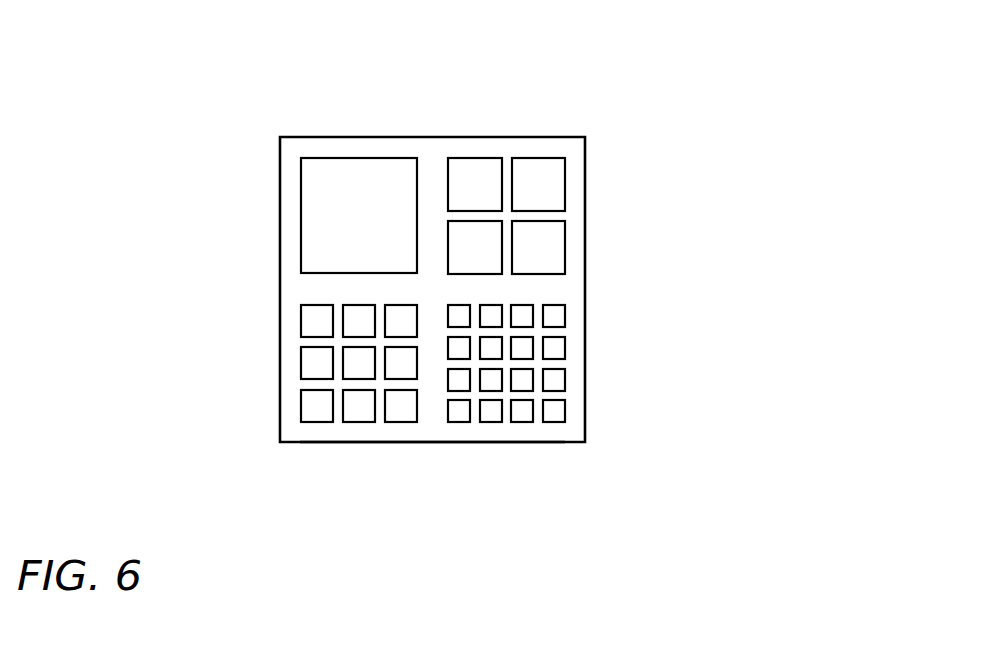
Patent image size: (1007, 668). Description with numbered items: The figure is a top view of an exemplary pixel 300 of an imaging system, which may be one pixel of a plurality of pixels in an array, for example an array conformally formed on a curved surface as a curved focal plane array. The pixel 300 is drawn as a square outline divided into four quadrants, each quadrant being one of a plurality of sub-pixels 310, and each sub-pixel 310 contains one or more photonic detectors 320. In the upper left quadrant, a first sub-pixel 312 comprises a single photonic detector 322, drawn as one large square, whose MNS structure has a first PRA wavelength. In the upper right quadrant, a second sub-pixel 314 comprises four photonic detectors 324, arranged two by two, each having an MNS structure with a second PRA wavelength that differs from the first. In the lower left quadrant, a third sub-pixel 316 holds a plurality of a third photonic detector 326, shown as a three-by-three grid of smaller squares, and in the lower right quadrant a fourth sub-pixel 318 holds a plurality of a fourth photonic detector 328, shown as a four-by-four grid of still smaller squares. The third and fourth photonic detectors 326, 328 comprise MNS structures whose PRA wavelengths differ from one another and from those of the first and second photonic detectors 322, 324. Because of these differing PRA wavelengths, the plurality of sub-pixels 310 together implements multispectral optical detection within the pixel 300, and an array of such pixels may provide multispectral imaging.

The pixel 300 is at (617, 62).
The sub-pixels 310 is at (353, 105).
The first sub-pixel 312 is at (308, 142).
The second sub-pixel 314 is at (555, 147).
The third sub-pixel 316 is at (312, 432).
The fourth sub-pixel 318 is at (555, 433).
The photonic detectors 320 is at (353, 475).
The single photonic detector 322 is at (302, 216).
The photonic detectors 324 is at (562, 182).
The third photonic detector 326 is at (302, 320).
The fourth photonic detector 328 is at (565, 315).